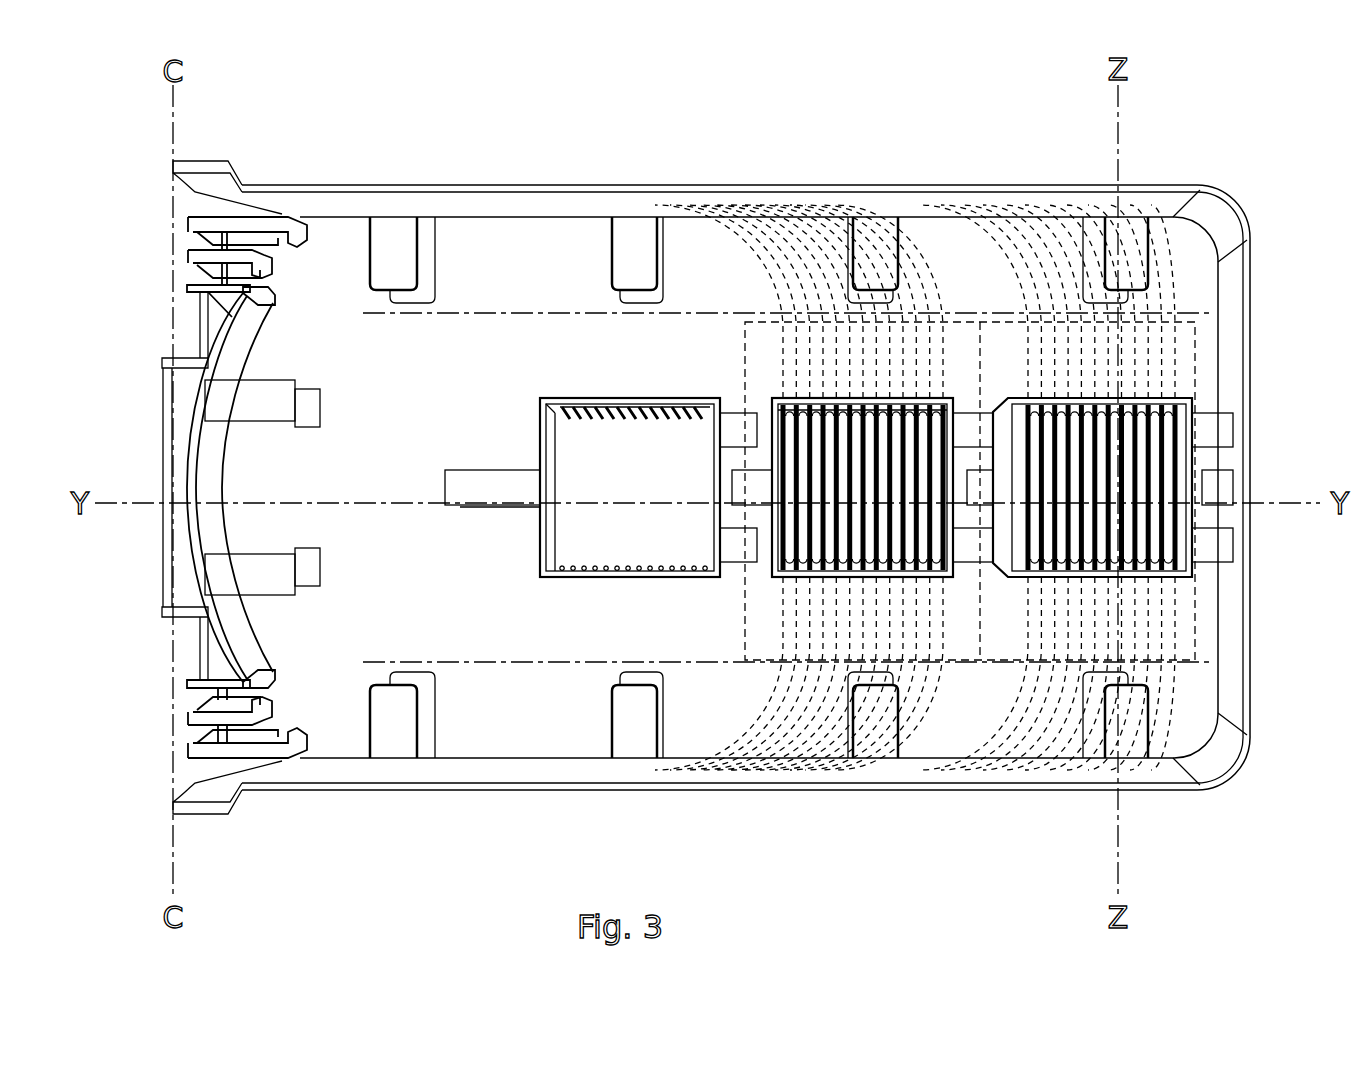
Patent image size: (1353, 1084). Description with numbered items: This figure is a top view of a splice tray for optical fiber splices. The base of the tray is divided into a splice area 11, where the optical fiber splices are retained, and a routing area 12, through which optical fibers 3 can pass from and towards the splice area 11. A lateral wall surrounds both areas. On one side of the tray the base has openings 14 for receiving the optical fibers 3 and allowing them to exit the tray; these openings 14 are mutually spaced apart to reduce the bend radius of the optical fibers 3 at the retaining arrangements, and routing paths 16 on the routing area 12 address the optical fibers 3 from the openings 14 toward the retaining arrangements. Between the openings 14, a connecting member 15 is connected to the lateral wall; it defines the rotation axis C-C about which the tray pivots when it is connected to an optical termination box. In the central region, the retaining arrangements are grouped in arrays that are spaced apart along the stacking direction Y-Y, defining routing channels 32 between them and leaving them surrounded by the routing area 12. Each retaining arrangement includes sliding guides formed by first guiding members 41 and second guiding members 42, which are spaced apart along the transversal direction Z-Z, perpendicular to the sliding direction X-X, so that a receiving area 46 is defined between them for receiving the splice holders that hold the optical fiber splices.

The optical fibers 3 is at (1037, 658).
The splice area 11 is at (640, 455).
The routing area 12 is at (445, 355).
The openings 14 is at (188, 258).
The connecting member 15 is at (170, 490).
The routing paths 16 is at (957, 315).
The routing channels 32 is at (735, 512).
The first guiding members 41 is at (569, 578).
The second guiding members 42 is at (567, 398).
The receiving area 46 is at (598, 513).